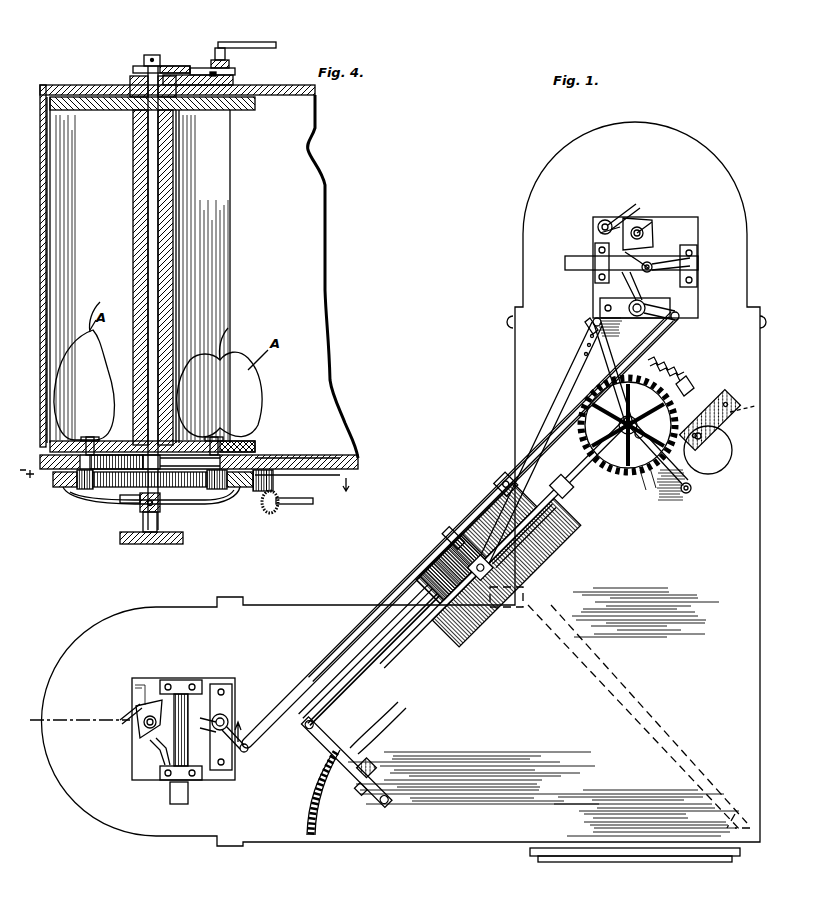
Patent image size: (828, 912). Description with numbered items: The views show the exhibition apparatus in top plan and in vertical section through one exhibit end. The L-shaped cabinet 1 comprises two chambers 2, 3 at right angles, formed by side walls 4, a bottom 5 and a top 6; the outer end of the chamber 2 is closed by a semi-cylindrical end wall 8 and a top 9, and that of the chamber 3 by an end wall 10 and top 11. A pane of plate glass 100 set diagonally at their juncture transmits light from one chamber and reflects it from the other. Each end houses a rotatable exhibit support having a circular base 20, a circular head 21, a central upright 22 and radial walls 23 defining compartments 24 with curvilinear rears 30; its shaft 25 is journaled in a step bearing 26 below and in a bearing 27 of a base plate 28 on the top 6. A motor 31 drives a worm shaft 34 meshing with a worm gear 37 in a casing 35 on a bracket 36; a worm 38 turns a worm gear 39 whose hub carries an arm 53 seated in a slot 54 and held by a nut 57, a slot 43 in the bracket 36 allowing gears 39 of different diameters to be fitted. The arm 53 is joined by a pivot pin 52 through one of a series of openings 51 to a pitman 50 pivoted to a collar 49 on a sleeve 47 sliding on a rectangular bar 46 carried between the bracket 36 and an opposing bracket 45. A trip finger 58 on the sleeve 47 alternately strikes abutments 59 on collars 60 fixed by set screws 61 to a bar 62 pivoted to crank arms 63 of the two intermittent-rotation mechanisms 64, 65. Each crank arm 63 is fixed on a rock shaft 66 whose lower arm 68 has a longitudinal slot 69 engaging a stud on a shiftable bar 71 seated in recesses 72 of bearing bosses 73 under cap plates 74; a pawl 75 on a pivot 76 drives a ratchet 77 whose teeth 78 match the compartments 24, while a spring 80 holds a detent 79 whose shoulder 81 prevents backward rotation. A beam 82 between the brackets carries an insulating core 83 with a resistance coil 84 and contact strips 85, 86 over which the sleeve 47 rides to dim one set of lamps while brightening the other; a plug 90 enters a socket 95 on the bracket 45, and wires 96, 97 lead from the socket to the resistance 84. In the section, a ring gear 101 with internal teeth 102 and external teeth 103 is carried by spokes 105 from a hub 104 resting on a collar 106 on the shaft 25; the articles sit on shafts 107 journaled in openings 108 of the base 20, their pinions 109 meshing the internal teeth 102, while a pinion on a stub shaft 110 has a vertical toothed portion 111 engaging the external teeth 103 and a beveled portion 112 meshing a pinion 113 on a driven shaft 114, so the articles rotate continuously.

In FIG. 1, the cabinet 1 is at (410, 496).
In FIG. 1, the chamber 2 is at (506, 533).
In FIG. 1, the chamber 3 is at (430, 825).
In FIG. 4, the side walls 4 is at (330, 277).
In FIG. 1, the side walls 4 is at (131, 730).
In FIG. 4, the bottom 5 is at (342, 460).
In FIG. 4, the top 6 is at (288, 97).
In FIG. 1, the top 6 is at (758, 535).
In FIG. 4, the end wall 8 is at (181, 483).
In FIG. 1, the top 9 is at (738, 208).
In FIG. 4, the end wall 10 is at (52, 206).
In FIG. 4, the top 11 is at (62, 92).
In FIG. 1, the top 11 is at (125, 812).
In FIG. 4, the circular base 20 is at (262, 445).
In FIG. 4, the circular head 21 is at (245, 112).
In FIG. 4, the central upright 22 is at (165, 208).
In FIG. 4, the radial walls 23 is at (222, 242).
In FIG. 4, the compartments 24 is at (218, 308).
In FIG. 4, the shaft 25 is at (150, 248).
In FIG. 1, the shaft 25 is at (650, 258).
In FIG. 4, the step bearing 26 is at (153, 545).
In FIG. 4, the bearing 27 is at (132, 80).
In FIG. 4, the base plate 28 is at (236, 79).
In FIG. 1, the base plate 28 is at (222, 770).
In FIG. 4, the curvilinear rear 30 is at (180, 156).
In FIG. 1, the motor 31 is at (712, 459).
In FIG. 1, the worm shaft 34 is at (688, 494).
In FIG. 1, the casing 35 is at (726, 410).
In FIG. 1, the bracket 36 is at (628, 440).
In FIG. 1, the worm gear 37 is at (755, 404).
In FIG. 1, the worm 38 is at (676, 384).
In FIG. 1, the worm gear 39 is at (632, 470).
In FIG. 1, the slot 43 is at (692, 390).
In FIG. 1, the bracket 45 is at (346, 762).
In FIG. 1, the bar 46 is at (366, 652).
In FIG. 1, the sleeve 47 is at (512, 537).
In FIG. 1, the collar 49 is at (506, 542).
In FIG. 1, the pitman 50 is at (566, 380).
In FIG. 1, the openings 51 is at (588, 334).
In FIG. 1, the pivot pin 52 is at (594, 318).
In FIG. 1, the arm 53 is at (606, 348).
In FIG. 1, the slot 54 is at (696, 440).
In FIG. 1, the nut 57 is at (634, 440).
In FIG. 1, the trip finger 58 is at (453, 538).
In FIG. 1, the abutments 59 is at (453, 567).
In FIG. 1, the collars 60 is at (506, 484).
In FIG. 1, the set screws 61 is at (506, 484).
In FIG. 4, the bar 62 is at (272, 42).
In FIG. 1, the bar 62 is at (662, 336).
In FIG. 4, the crank arms 63 is at (226, 48).
In FIG. 1, the crank arms 63 is at (678, 310).
In FIG. 1, the mechanism 64 is at (655, 268).
In FIG. 4, the mechanism 65 is at (198, 68).
In FIG. 1, the mechanism 65 is at (214, 694).
In FIG. 4, the rock shafts 66 is at (213, 60).
In FIG. 1, the rock shafts 66 is at (640, 316).
In FIG. 4, the arm 68 is at (212, 72).
In FIG. 1, the arm 68 is at (205, 780).
In FIG. 1, the longitudinal slot 69 is at (322, 836).
In FIG. 1, the shiftable bar 71 is at (566, 262).
In FIG. 1, the recesses 72 is at (596, 250).
In FIG. 1, the bearing bosses 73 is at (655, 298).
In FIG. 1, the cap plates 74 is at (692, 260).
In FIG. 1, the pawl 75 is at (654, 240).
In FIG. 1, the pivot 76 is at (698, 255).
In FIG. 4, the ratchet 77 is at (162, 68).
In FIG. 1, the ratchet 77 is at (650, 220).
In FIG. 4, the teeth 78 is at (146, 62).
In FIG. 1, the teeth 78 is at (645, 232).
In FIG. 1, the detent 79 is at (612, 228).
In FIG. 1, the spring 80 is at (606, 222).
In FIG. 1, the shoulder 81 is at (632, 206).
In FIG. 1, the beam 82 is at (562, 486).
In FIG. 1, the core 83 is at (476, 543).
In FIG. 1, the resistance coil 84 is at (506, 572).
In FIG. 1, the contact strip 85 is at (630, 462).
In FIG. 1, the contact strip 86 is at (374, 660).
In FIG. 1, the plug 90 is at (367, 768).
In FIG. 1, the socket 95 is at (360, 789).
In FIG. 1, the wire 96 is at (402, 708).
In FIG. 1, the wire 97 is at (408, 718).
In FIG. 1, the pane of plate glass 100 is at (663, 731).
In FIG. 4, the ring gear 101 is at (68, 500).
In FIG. 4, the teeth 102 is at (118, 490).
In FIG. 4, the teeth 103 is at (60, 485).
In FIG. 4, the hub 104 is at (160, 503).
In FIG. 4, the spokes 105 is at (218, 492).
In FIG. 4, the collar 106 is at (140, 505).
In FIG. 4, the shafts 107 is at (213, 438).
In FIG. 4, the openings 108 is at (240, 444).
In FIG. 4, the pinions 109 is at (180, 508).
In FIG. 4, the stub shaft 110 is at (268, 458).
In FIG. 4, the vertical toothed portion 111 is at (272, 484).
In FIG. 4, the beveled toothed portion 112 is at (258, 502).
In FIG. 4, the pinion 113 is at (278, 512).
In FIG. 4, the shaft 114 is at (300, 506).